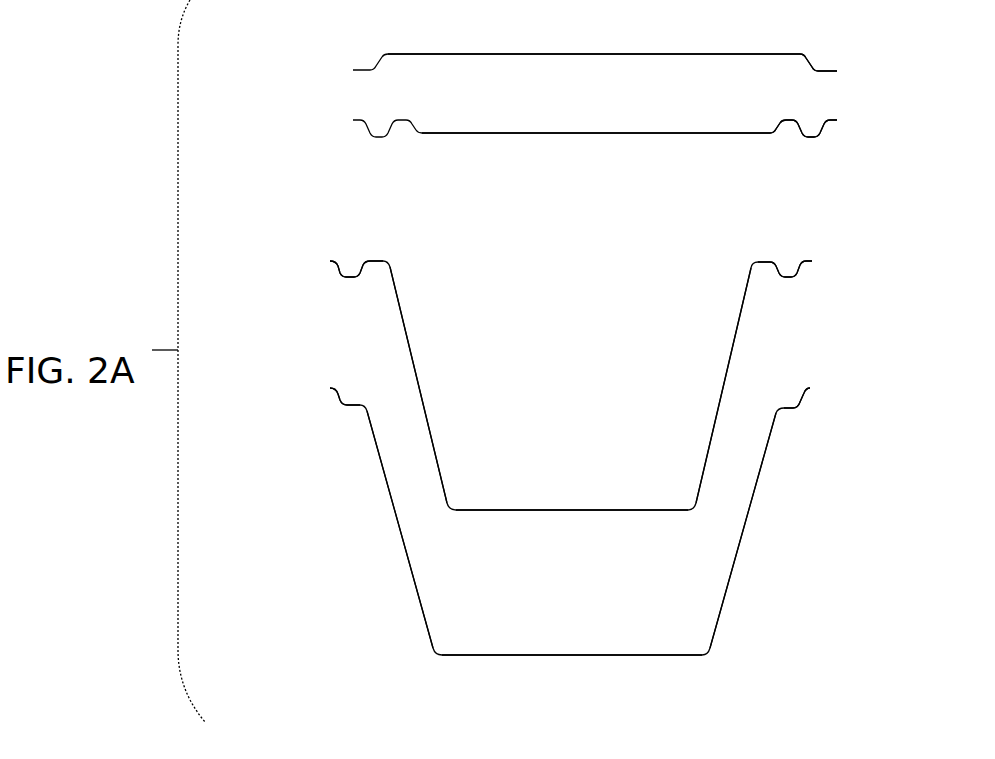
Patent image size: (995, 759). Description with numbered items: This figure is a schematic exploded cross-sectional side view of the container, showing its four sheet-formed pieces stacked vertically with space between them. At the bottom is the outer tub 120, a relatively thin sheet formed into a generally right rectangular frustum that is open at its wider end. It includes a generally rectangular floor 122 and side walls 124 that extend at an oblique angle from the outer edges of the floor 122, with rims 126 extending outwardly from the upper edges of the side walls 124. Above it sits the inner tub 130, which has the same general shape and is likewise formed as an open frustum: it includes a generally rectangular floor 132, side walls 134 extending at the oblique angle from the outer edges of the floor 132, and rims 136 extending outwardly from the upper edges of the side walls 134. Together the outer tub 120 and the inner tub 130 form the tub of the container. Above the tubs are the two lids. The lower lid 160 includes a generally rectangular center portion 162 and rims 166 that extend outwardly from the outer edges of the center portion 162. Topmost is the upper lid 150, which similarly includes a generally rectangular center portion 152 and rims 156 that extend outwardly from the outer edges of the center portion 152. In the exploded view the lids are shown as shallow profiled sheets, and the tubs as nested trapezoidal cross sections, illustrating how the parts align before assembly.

The outer tub 120 is at (373, 582).
The floor 122 is at (522, 655).
The side walls 124 is at (392, 503).
The rims 126 is at (338, 403).
The inner tub 130 is at (391, 328).
The floor 132 is at (570, 510).
The side walls 134 is at (413, 363).
The rims 136 is at (338, 275).
The upper lid 150 is at (328, 70).
The center portion 152 is at (545, 53).
The rims 156 is at (822, 71).
The lower lid 160 is at (336, 131).
The center portion 162 is at (515, 133).
The rims 166 is at (800, 137).